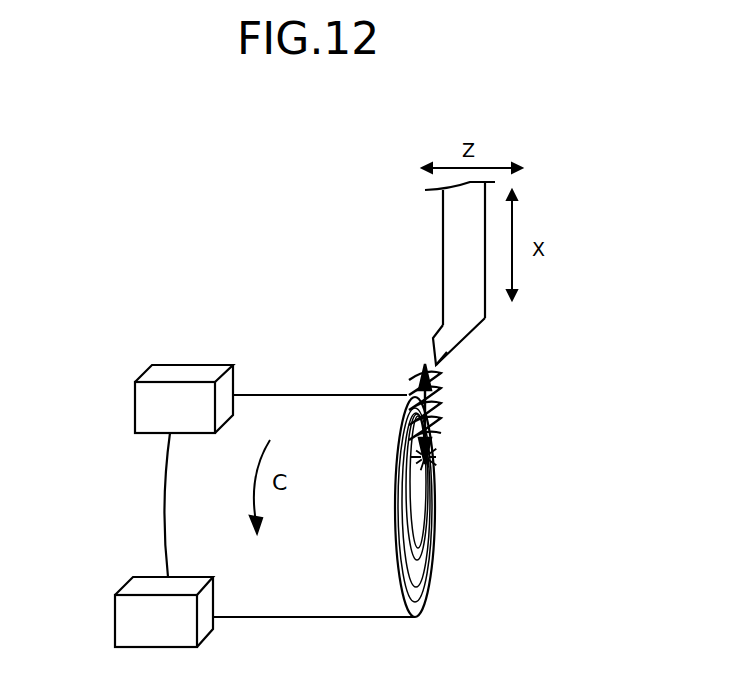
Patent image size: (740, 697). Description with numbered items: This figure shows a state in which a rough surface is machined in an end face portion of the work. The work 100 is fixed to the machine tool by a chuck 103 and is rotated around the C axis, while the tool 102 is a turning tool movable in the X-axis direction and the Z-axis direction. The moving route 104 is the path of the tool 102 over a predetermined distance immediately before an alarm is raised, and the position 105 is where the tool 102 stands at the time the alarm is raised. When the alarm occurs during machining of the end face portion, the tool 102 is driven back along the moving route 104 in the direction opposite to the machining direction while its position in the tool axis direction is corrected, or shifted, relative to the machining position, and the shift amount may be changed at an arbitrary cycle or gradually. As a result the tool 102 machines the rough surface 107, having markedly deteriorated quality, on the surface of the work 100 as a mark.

The work 100 is at (162, 517).
The tool 102 is at (442, 216).
The chuck 103 is at (132, 410).
The moving route 104 is at (446, 378).
The position at the time when an alarm is raised 105 is at (446, 462).
The rough surface 107 is at (440, 552).